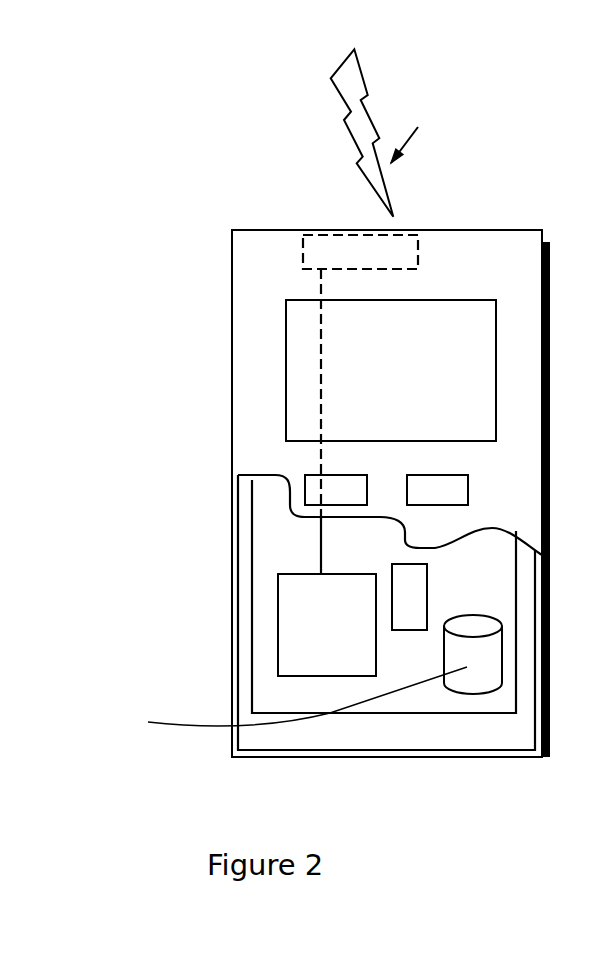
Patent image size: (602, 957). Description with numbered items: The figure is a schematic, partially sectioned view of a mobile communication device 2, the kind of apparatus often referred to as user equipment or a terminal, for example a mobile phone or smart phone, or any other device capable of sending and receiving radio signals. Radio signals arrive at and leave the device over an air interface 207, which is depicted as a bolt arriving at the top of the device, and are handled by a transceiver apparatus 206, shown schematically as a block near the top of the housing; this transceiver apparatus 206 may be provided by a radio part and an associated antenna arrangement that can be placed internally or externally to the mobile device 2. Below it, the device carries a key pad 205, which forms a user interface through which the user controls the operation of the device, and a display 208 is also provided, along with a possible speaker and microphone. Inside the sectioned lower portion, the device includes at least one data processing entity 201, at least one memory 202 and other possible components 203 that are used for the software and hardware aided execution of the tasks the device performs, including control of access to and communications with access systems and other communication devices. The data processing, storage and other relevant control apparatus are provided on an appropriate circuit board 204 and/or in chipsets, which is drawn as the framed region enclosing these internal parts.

The communication device 2 is at (320, 418).
The data processing entity 201 is at (410, 580).
The memory 202 is at (278, 695).
The other possible components 203 is at (309, 491).
The circuit board 204 is at (285, 608).
The key pad 205 is at (303, 356).
The transceiver apparatus 206 is at (407, 245).
The air interface 207 is at (411, 132).
The display 208 is at (234, 274).